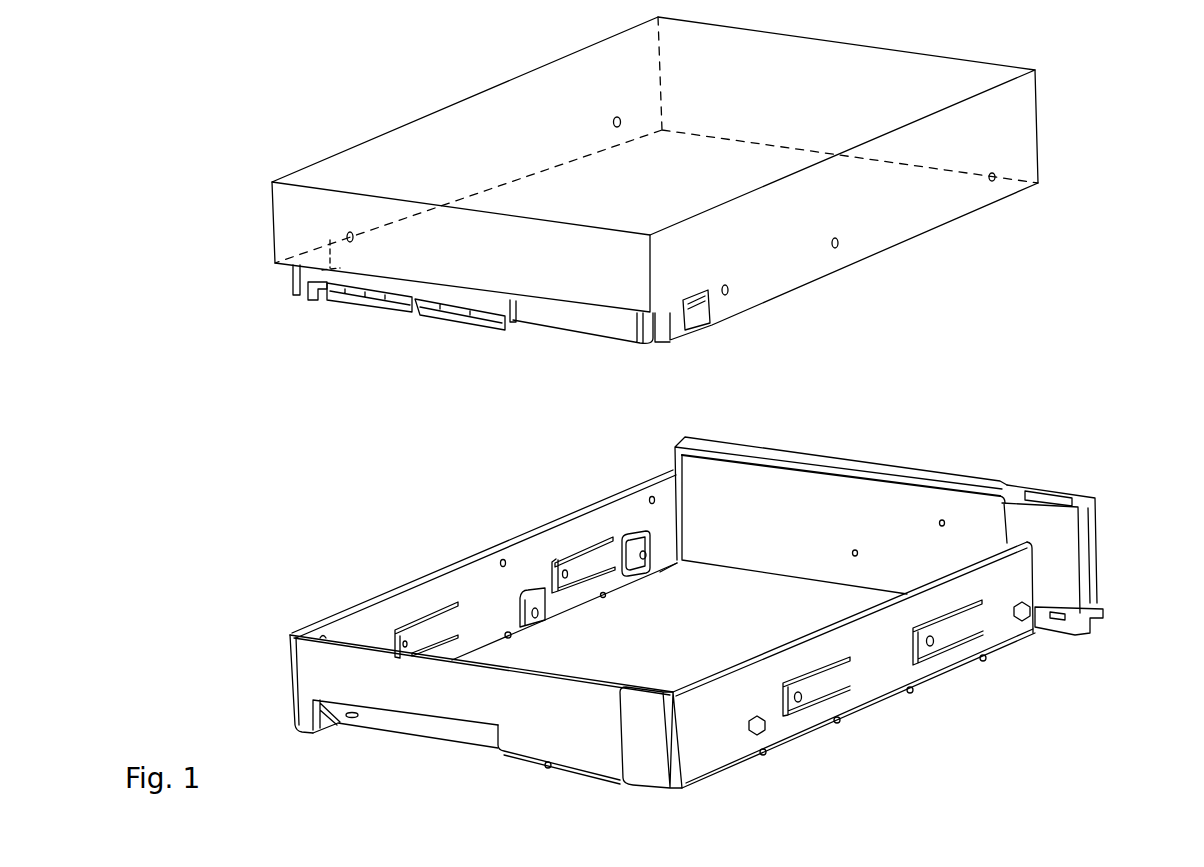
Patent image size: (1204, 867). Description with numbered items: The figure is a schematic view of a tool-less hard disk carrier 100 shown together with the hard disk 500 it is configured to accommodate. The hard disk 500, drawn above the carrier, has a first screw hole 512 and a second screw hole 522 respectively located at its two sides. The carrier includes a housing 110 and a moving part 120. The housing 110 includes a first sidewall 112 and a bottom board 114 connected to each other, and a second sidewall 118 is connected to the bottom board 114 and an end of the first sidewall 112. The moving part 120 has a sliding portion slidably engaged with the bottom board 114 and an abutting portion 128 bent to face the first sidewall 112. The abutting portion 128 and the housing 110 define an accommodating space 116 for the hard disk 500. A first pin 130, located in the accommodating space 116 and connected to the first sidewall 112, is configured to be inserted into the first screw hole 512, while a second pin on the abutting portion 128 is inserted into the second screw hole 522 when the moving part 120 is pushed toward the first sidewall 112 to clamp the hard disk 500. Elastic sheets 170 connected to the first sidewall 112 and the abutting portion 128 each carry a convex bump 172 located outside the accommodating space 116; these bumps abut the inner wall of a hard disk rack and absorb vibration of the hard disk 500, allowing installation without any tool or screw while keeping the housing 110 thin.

The tool-less hard disk carrier 100 is at (1062, 436).
The housing 110 is at (634, 585).
The first sidewall 112 is at (357, 607).
The bottom board 114 is at (720, 597).
The accommodating space 116 is at (618, 612).
The second sidewall 118 is at (873, 512).
The moving part 120 is at (913, 675).
The abutting portion 128 is at (870, 673).
The first pin 130 is at (641, 552).
The elastic sheet 170 is at (849, 733).
The convex bump 172 is at (800, 700).
The hard disk 500 is at (438, 180).
The first screw hole 512 is at (608, 117).
The second screw hole 522 is at (1003, 178).